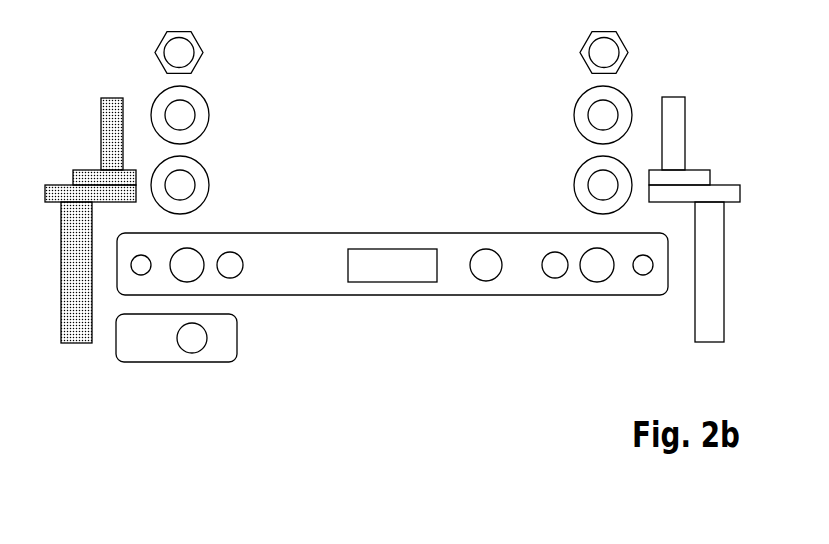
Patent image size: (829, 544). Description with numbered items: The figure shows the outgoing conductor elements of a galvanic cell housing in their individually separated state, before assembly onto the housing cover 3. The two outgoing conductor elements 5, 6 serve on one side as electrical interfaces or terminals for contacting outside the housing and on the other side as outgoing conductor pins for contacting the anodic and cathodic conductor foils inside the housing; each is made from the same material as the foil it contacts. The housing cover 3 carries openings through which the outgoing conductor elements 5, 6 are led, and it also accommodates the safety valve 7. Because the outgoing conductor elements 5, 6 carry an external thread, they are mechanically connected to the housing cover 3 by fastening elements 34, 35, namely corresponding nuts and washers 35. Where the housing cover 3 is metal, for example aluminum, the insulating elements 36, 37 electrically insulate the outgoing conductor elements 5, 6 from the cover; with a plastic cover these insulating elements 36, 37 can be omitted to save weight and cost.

The housing cover 3 is at (308, 246).
The outgoing conductor element 5 is at (110, 135).
The outgoing conductor element 6 is at (675, 135).
The safety valve 7 is at (392, 258).
The fastening element 34 is at (203, 50).
The fastening element 35 is at (200, 113).
The insulating element 36 is at (200, 183).
The insulating element 37 is at (227, 338).